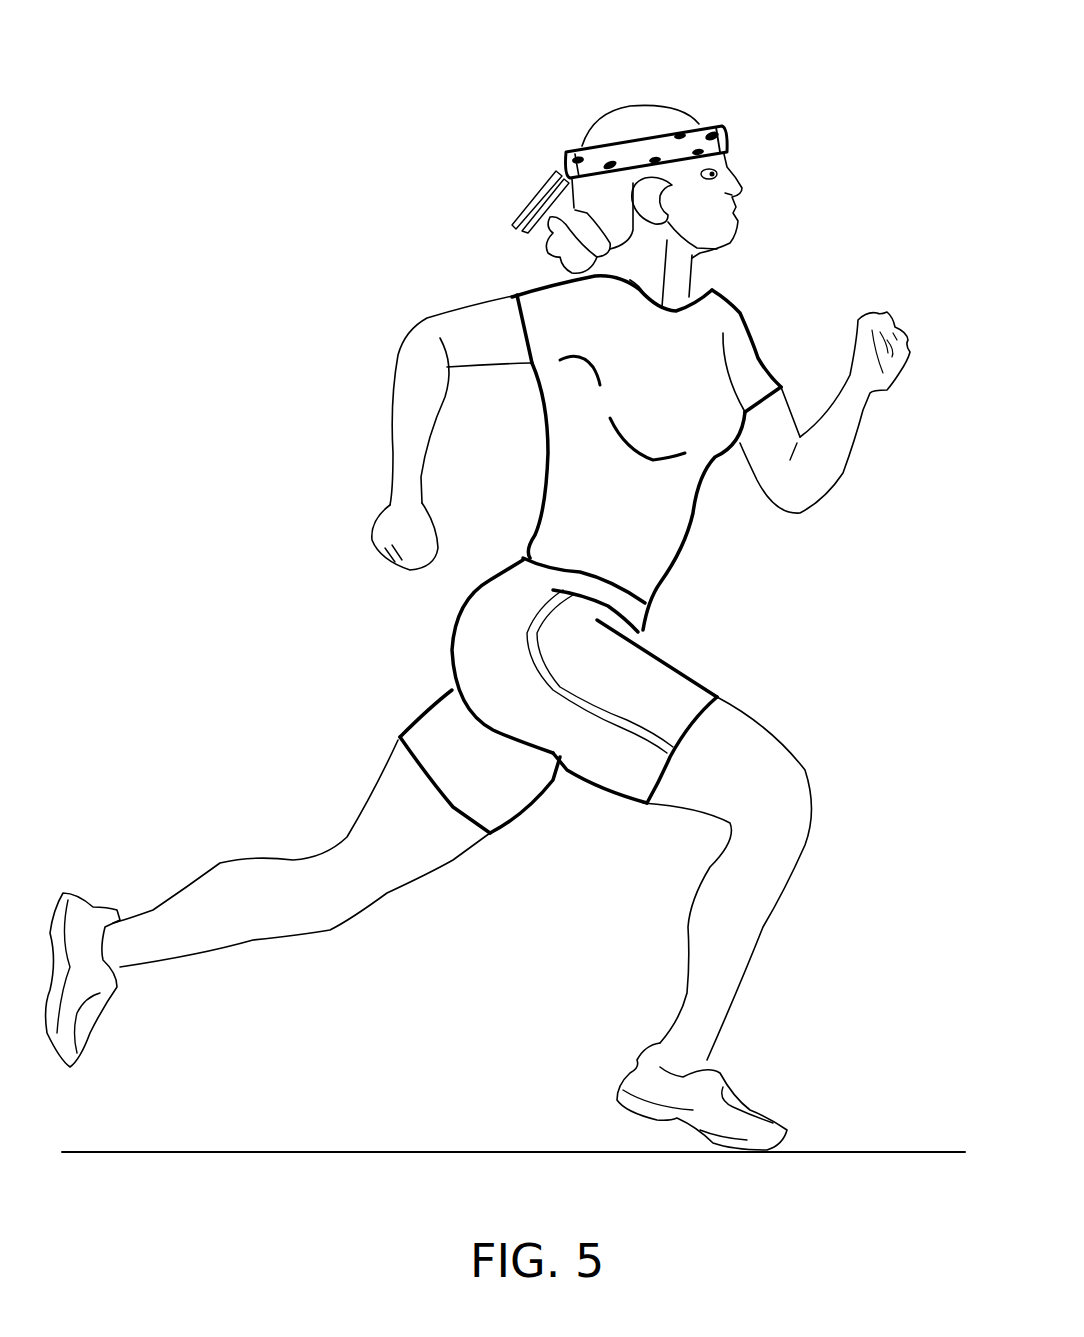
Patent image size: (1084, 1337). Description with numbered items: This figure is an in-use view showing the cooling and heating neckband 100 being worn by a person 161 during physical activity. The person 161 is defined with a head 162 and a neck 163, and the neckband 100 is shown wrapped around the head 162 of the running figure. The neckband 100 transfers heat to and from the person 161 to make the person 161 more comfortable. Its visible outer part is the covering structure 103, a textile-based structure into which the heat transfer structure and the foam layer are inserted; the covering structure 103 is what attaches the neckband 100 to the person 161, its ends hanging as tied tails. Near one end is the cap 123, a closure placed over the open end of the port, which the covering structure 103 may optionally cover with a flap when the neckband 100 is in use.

The cooling and heating neckband 100 is at (653, 150).
The head 162 is at (620, 115).
The cap 123 is at (727, 132).
The covering structure 103 is at (557, 187).
The neck 163 is at (663, 272).
The person 161 is at (722, 268).